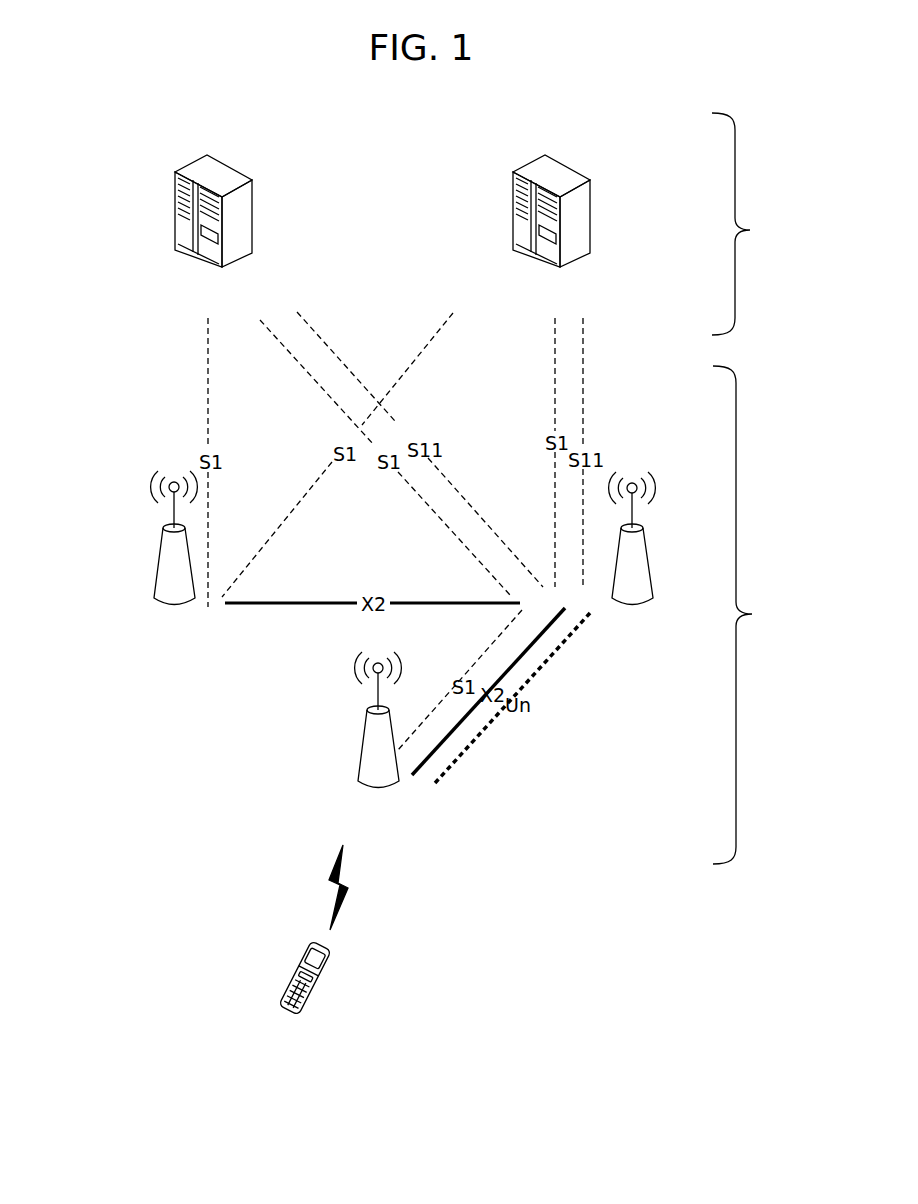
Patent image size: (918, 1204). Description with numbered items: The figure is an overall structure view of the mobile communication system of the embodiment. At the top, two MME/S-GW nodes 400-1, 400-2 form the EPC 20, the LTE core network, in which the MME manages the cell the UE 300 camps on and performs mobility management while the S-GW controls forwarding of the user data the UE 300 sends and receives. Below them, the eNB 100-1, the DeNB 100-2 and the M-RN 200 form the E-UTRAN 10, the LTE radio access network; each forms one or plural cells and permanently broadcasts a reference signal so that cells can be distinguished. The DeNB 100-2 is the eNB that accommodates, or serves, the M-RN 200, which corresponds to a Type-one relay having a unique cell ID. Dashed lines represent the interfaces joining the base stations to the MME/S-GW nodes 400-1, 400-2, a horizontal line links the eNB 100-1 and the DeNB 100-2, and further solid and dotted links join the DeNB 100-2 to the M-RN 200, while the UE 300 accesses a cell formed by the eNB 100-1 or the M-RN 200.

The MME/S-GW 400-1 is at (268, 145).
The MME/S-GW 400-2 is at (606, 145).
The eNB 100-1 is at (160, 558).
The DeNB 100-2 is at (683, 531).
The M-RN 200 is at (365, 729).
The UE 300 is at (333, 964).
The EPC 20 is at (753, 224).
The E-UTRAN 10 is at (782, 615).